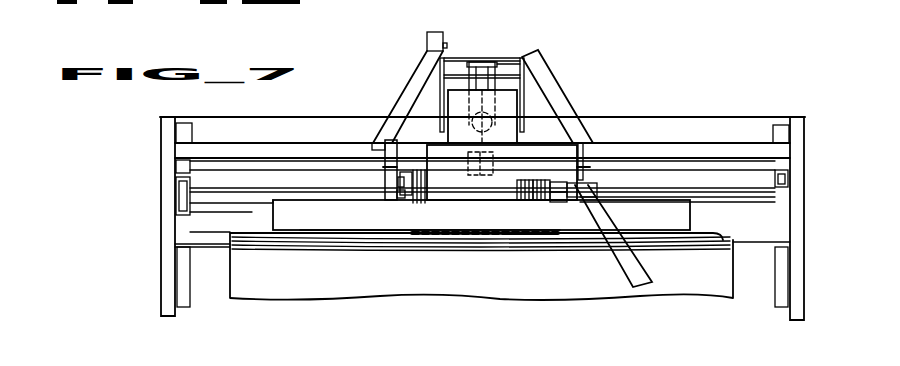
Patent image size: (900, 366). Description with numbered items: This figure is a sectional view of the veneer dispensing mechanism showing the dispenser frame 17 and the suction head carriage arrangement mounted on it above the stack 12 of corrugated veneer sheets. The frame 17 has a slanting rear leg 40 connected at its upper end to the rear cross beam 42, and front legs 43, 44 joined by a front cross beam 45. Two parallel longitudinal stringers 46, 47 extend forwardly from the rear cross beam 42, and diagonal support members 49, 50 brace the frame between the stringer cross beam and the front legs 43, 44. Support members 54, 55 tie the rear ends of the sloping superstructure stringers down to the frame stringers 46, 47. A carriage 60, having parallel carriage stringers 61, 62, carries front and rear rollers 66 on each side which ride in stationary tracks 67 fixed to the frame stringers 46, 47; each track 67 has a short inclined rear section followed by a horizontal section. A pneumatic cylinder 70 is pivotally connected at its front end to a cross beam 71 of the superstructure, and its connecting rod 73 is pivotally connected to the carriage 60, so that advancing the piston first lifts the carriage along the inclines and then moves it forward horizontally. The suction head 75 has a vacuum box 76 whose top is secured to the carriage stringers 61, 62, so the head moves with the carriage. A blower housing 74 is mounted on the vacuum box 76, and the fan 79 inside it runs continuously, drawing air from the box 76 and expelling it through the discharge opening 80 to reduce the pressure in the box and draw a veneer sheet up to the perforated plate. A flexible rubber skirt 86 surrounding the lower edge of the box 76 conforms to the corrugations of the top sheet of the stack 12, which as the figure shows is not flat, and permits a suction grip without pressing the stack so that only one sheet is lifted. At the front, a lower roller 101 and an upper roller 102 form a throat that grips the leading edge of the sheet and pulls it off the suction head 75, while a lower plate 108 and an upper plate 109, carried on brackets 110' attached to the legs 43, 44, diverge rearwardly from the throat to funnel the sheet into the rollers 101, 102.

The base / bed 12 is at (295, 292).
The dispenser frame 17 is at (558, 80).
The slanting rear leg 40 is at (652, 277).
The rear cross beam 42 is at (563, 136).
The front leg 43 is at (800, 290).
The front leg 44 is at (168, 282).
The front cross beam 45 is at (697, 117).
The longitudinal stringer 46 is at (385, 148).
The longitudinal stringer 47 is at (583, 157).
The diagonal support member 49 is at (172, 150).
The diagonal support member 50 is at (797, 152).
The support member 54 is at (430, 60).
The support member 55 is at (540, 55).
The carriage 60 is at (393, 197).
The carriage stringer 61 is at (405, 200).
The carriage stringer 62 is at (560, 200).
The roller 66 is at (383, 167).
The stationary track 67 is at (393, 130).
The pneumatic cylinder 70 is at (483, 62).
The cross beam 71 is at (507, 60).
The connecting rod 73 is at (496, 153).
The blower housing 74 is at (462, 190).
The suction head 75 is at (263, 217).
The vacuum housing (box) 76 is at (365, 231).
The fan 79 is at (520, 196).
The discharge opening 80 is at (545, 196).
The flexible skirt 86 is at (258, 234).
The lower roller 101 is at (790, 212).
The upper roller 102 is at (790, 199).
The lower plate 108 is at (178, 237).
The upper plate 109 is at (790, 185).
The bracket 110' is at (473, 233).